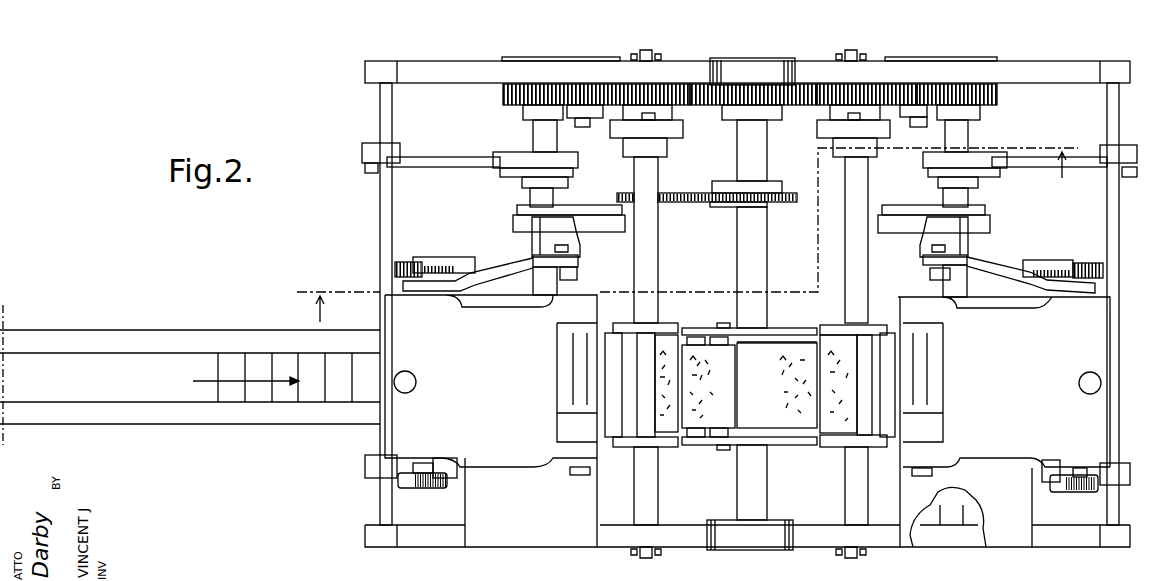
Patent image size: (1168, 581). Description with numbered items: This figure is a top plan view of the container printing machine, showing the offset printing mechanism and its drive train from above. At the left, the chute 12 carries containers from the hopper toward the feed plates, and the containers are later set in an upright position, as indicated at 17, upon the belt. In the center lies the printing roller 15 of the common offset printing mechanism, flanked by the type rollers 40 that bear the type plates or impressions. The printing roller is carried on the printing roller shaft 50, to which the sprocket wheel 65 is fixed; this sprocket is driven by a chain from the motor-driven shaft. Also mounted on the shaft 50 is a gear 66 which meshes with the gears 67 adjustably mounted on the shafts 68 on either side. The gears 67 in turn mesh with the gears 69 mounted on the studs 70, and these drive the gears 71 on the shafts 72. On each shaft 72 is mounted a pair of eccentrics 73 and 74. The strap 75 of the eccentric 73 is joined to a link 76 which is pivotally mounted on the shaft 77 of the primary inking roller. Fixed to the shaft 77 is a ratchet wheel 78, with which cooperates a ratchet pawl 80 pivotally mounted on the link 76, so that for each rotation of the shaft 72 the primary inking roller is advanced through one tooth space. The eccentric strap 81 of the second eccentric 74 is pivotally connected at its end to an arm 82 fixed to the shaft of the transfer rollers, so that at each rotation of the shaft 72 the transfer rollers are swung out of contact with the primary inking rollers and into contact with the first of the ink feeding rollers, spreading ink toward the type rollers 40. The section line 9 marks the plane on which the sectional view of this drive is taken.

The section line 9- 9 is at (687, 220).
The chute 12 is at (250, 418).
The printing roller 15 is at (749, 386).
The upright container position 17 is at (312, 397).
The type rollers 40 is at (641, 436).
The printing roller shaft 50 is at (756, 247).
The sprocket wheel 65 is at (726, 204).
The gear 66 is at (733, 95).
The gears 67 is at (669, 86).
The shafts 68 is at (660, 174).
The gears 69 is at (597, 83).
The studs 70 is at (585, 128).
The gears 71 is at (503, 94).
The shafts 72 is at (541, 128).
The eccentric 73 is at (582, 208).
The eccentric 74 is at (512, 178).
The strap 75 is at (566, 238).
The link 76 is at (492, 271).
The shaft 77 is at (392, 133).
The ratchet wheel 78 is at (405, 263).
The ratchet pawl 80 is at (445, 259).
The eccentric strap 81 is at (455, 165).
The arm 82 is at (372, 143).